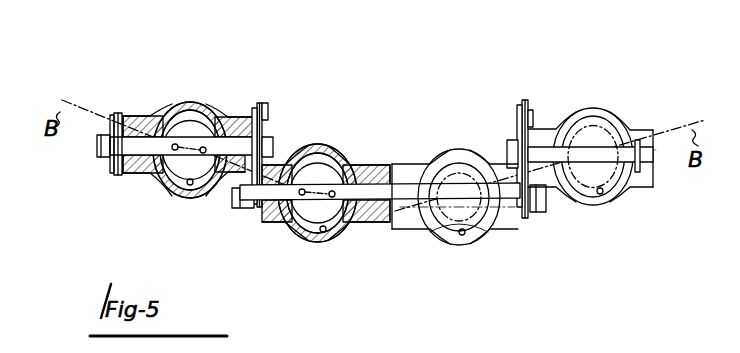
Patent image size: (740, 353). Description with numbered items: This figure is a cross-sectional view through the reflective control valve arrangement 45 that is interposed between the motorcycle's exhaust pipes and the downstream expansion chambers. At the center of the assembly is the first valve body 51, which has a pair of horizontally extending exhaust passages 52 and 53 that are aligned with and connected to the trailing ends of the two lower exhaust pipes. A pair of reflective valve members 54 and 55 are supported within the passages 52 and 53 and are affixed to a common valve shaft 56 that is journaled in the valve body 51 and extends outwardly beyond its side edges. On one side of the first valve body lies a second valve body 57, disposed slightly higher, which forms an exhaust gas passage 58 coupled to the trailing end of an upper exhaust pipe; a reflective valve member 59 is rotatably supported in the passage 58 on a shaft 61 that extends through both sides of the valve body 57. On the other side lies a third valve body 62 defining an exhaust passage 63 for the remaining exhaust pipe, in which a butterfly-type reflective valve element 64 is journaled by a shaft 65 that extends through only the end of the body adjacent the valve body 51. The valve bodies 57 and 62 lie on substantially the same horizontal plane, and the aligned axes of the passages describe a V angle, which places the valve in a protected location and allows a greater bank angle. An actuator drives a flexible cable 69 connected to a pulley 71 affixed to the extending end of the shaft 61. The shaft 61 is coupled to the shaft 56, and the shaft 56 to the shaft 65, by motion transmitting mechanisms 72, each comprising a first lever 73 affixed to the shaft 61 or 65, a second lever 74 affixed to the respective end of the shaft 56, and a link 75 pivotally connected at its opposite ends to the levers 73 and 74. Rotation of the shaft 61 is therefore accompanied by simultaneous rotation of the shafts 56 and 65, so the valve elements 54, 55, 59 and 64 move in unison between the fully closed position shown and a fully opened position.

The reflective control valve arrangement 45 is at (637, 79).
The first valve body 51 is at (395, 162).
The exhaust passage 52 is at (323, 242).
The exhaust passage 53 is at (458, 242).
The reflective valve member 54 is at (333, 150).
The reflective valve member 55 is at (460, 142).
The common valve shaft 56 is at (394, 224).
The second valve body 57 is at (158, 101).
The exhaust gas passage 58 is at (182, 195).
The reflective valve member 59 is at (187, 110).
The shaft 61 is at (97, 149).
The third valve body 62 is at (580, 106).
The exhaust passage 63 is at (606, 192).
The reflective valve element 64 is at (601, 125).
The shaft 65 is at (643, 174).
The flexible cable 69 is at (114, 180).
The pulley 71 is at (103, 171).
The motion transmitting mechanism 72 is at (283, 123).
The first lever 73 is at (268, 104).
The second lever 74 is at (252, 210).
The link 75 is at (255, 106).